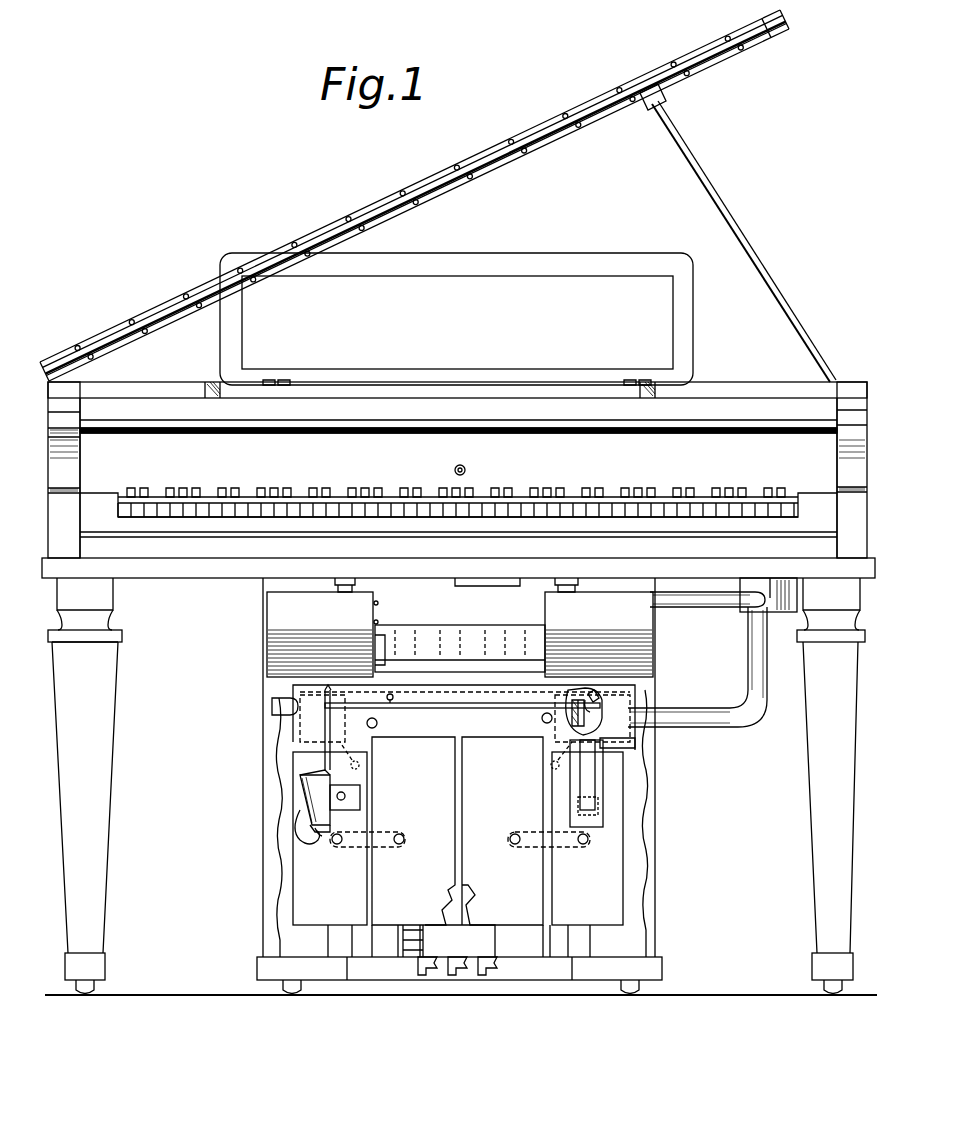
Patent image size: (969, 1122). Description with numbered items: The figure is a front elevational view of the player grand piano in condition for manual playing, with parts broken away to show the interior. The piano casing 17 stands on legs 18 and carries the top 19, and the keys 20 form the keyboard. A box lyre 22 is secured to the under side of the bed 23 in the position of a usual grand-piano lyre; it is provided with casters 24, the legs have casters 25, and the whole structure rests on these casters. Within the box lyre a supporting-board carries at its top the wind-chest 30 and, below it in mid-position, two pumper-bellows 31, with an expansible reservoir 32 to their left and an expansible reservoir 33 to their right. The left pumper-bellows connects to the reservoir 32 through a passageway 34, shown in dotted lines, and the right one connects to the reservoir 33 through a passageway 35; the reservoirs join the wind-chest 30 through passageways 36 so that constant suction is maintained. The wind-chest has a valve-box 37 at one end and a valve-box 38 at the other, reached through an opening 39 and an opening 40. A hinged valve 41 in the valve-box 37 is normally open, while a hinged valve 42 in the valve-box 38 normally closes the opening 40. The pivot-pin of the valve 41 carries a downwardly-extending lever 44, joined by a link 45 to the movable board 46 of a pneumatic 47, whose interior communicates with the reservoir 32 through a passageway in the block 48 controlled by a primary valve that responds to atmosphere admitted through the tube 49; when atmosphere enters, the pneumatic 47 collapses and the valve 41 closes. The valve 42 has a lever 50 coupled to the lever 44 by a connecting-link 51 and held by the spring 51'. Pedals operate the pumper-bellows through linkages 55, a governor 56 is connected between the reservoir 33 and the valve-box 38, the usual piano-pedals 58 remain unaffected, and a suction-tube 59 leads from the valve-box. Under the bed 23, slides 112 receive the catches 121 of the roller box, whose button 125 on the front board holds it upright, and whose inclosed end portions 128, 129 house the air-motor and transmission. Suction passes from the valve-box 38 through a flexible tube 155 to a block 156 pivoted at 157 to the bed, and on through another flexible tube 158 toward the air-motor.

The piano casing 17 is at (78, 469).
The legs 18 is at (108, 742).
The top 19 is at (494, 165).
The keys 20 is at (278, 512).
The box lyre 22 is at (265, 915).
The bed 23 is at (222, 575).
The casters 24 is at (292, 998).
The casters 25 is at (88, 998).
The wind-chest 30 is at (421, 738).
The pumper-bellows 31 is at (393, 918).
The expansible reservoir 32 is at (310, 888).
The expansible reservoir 33 is at (607, 895).
The passageway 34 is at (385, 835).
The passageway 35 is at (527, 832).
The passageways 36 is at (360, 767).
The valve-box 37 is at (297, 730).
The valve-box 38 is at (610, 730).
The opening 39 is at (378, 722).
The opening 40 is at (541, 718).
The valve 41 is at (300, 712).
The valve 42 is at (590, 712).
The lever 44 is at (320, 757).
The link 45 is at (306, 787).
The movable board 46 is at (307, 798).
The pneumatic 47 is at (300, 832).
The block 48 is at (360, 796).
The tube 49 is at (318, 835).
The lever 50 is at (585, 700).
The connecting-link 51 is at (462, 717).
The spring 51' is at (408, 697).
The linkages 55 is at (495, 940).
The governor 56 is at (597, 803).
The piano-pedals 58 is at (457, 975).
The suction-tube 59 is at (282, 705).
The slides 112 is at (562, 578).
The catches 121 is at (335, 590).
The button 125 is at (467, 470).
The end portion 128 is at (268, 647).
The end portion 129 is at (650, 595).
The flexible tube 155 is at (748, 718).
The block 156 is at (765, 585).
The pivot 157 is at (785, 570).
The flexible tube 158 is at (712, 607).